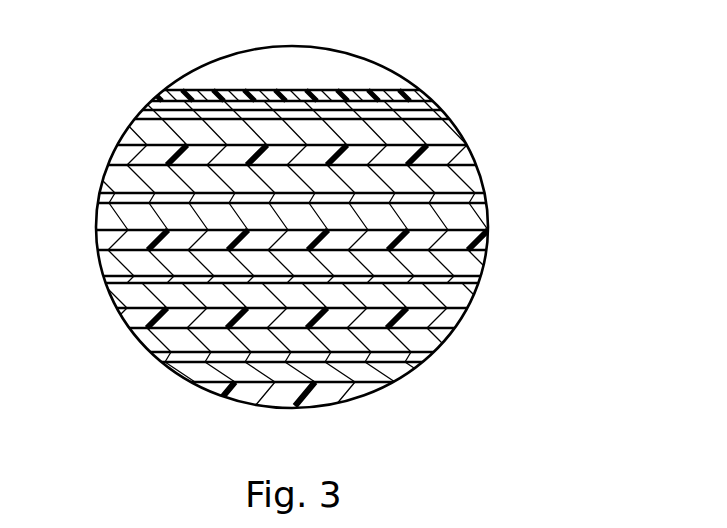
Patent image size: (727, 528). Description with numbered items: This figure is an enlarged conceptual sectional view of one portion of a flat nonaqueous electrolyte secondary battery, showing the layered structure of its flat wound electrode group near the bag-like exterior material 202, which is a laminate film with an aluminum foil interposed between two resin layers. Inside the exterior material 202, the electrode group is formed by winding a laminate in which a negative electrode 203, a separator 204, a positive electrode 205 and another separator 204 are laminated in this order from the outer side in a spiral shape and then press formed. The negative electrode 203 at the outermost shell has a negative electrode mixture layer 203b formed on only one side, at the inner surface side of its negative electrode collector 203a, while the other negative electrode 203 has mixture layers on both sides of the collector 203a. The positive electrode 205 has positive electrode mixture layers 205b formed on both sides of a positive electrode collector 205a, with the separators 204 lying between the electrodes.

The bag-like exterior material 202 is at (423, 91).
The negative electrode 203 is at (375, 208).
The negative electrode collector 203a is at (443, 108).
The negative electrode mixture layer 203b is at (447, 133).
The separator 204 is at (121, 158).
The positive electrode 205 is at (374, 291).
The positive electrode collector 205a is at (477, 203).
The positive electrode mixture layer 205b is at (463, 173).